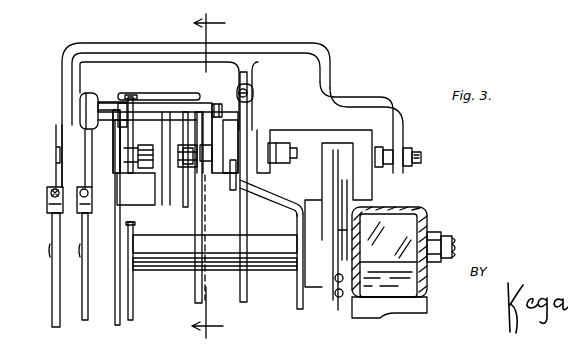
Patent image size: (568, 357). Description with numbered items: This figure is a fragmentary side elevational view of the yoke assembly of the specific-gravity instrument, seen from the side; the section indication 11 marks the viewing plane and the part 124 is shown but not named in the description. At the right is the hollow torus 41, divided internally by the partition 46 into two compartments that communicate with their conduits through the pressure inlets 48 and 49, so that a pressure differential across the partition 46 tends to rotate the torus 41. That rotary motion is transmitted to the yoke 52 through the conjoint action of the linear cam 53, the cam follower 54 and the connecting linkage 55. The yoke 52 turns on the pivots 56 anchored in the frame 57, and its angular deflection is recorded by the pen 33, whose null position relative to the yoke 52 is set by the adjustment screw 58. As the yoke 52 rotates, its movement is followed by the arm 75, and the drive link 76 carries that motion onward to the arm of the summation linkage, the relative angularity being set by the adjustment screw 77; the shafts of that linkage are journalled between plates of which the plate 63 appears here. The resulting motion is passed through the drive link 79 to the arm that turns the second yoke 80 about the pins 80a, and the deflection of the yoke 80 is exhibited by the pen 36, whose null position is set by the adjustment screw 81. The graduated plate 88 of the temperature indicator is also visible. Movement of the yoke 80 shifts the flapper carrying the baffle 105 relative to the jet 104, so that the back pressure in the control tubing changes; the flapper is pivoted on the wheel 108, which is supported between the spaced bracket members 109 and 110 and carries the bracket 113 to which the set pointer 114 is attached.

The section line 11 is at (218, 171).
The pen 33 is at (52, 276).
The pen 36 is at (83, 287).
The hollow torus 41 is at (413, 307).
The partition 46 is at (398, 226).
The pressure inlet 48 is at (445, 236).
The pressure inlet 49 is at (448, 257).
The yoke 52 is at (125, 50).
The linear cam 53 is at (338, 296).
The cam follower 54 is at (335, 279).
The connecting linkage 55 is at (336, 120).
The pivots 56 is at (262, 153).
The frame 57 is at (304, 195).
The adjustment screw 58 is at (47, 190).
The plate 63 is at (297, 274).
The arm 75 is at (233, 186).
The drive link 76 is at (242, 282).
The adjustment screw 77 is at (250, 93).
The drive link 79 is at (193, 283).
The yoke 80 is at (180, 86).
The pins 80a is at (123, 160).
The adjustment screw 81 is at (77, 190).
The plate 88 is at (305, 9).
The jet 104 is at (185, 195).
The baffle 105 is at (183, 152).
The wheel 108 is at (144, 118).
The bracket member 109 is at (124, 148).
The bracket member 110 is at (217, 106).
The bracket 113 is at (137, 197).
The set pointer 114 is at (112, 316).
The cap 124 is at (80, 96).